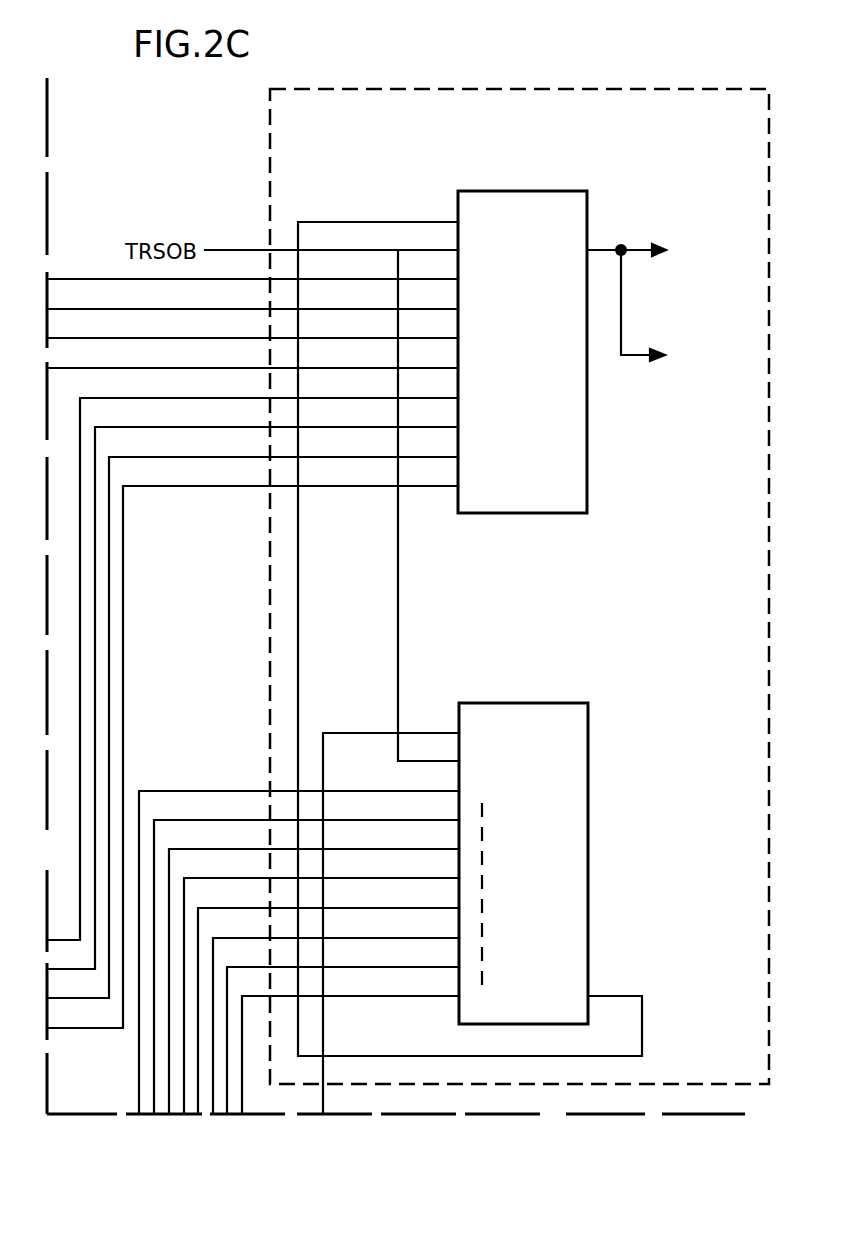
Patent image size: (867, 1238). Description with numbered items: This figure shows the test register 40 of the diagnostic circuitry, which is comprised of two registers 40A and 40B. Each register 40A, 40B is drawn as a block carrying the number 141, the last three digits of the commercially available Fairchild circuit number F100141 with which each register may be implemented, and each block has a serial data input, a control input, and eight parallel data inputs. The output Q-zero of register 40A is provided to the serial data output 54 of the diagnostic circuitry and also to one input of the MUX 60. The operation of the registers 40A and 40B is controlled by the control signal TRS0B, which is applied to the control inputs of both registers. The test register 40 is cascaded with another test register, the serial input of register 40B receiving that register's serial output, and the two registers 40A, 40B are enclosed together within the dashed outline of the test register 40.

The test register 40 is at (632, 88).
The register 40A is at (523, 191).
The register 40B is at (536, 705).
The circuit number F100141 141 is at (561, 609).
The serial data output 54 is at (656, 246).
The MUX 60 is at (669, 321).